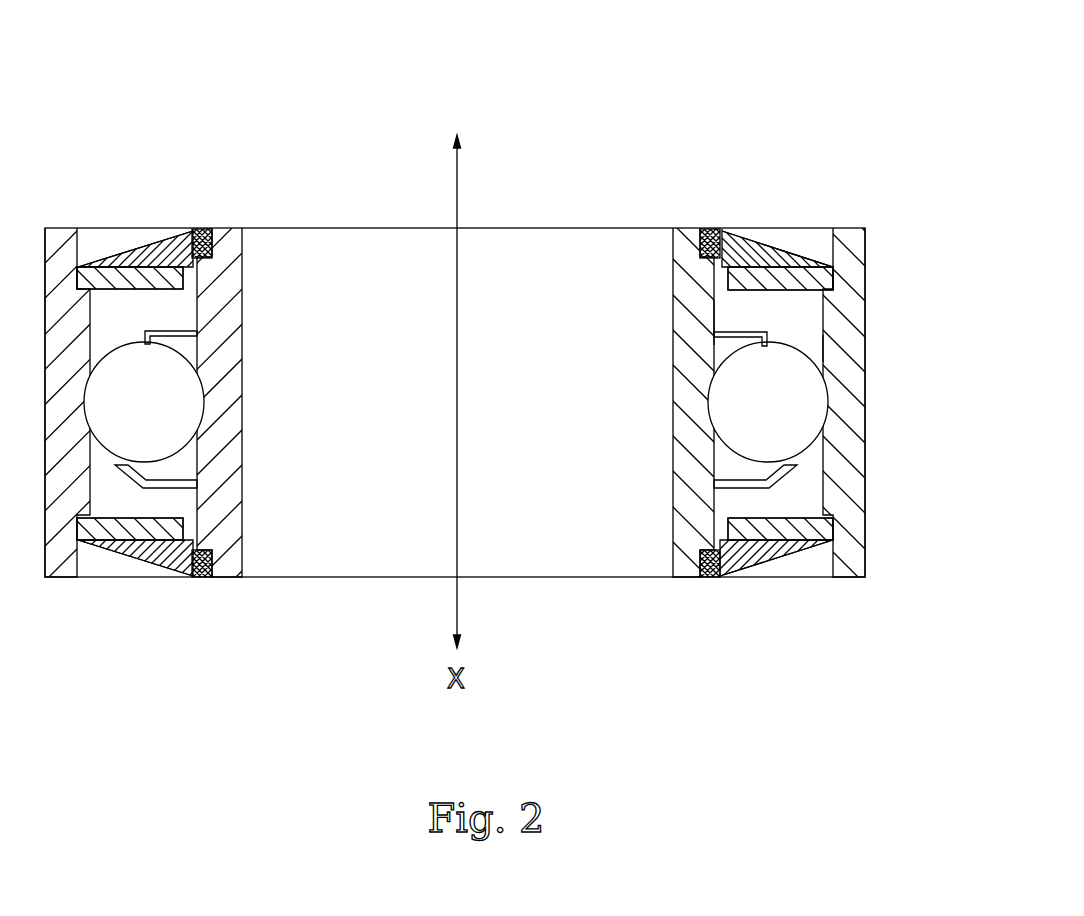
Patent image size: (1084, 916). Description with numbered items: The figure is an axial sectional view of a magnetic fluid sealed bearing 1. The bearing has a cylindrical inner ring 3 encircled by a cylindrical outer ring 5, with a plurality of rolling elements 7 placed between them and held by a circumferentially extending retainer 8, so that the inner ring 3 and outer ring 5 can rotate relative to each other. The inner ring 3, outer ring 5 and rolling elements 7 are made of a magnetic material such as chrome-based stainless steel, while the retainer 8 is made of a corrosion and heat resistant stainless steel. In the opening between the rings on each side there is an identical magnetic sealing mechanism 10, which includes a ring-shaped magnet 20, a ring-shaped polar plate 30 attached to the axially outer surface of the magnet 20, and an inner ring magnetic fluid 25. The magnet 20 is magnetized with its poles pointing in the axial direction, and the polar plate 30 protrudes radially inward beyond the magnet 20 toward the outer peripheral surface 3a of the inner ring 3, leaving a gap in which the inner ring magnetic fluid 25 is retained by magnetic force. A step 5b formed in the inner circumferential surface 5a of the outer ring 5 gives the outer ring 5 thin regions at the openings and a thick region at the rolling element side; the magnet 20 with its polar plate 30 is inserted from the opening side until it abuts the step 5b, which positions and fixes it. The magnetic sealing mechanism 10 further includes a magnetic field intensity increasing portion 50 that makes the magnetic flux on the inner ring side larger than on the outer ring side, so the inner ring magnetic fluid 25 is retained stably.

The magnetic fluid sealed bearing 1 is at (665, 84).
The inner ring 3 is at (683, 272).
The outer peripheral surface of the inner ring 3a is at (714, 322).
The outer ring 5 is at (862, 318).
The inner circumferential surface of the outer ring 5a is at (808, 345).
The step 5b is at (835, 274).
The rolling elements 7 is at (813, 403).
The retainer 8 is at (713, 481).
The magnetic sealing mechanism 10 is at (797, 195).
The ring-shaped magnet 20 is at (833, 271).
The inner ring magnetic fluid 25 is at (706, 232).
The ring-shaped polar plate 30 is at (745, 230).
The magnetic field intensity increasing portion 50 is at (800, 244).